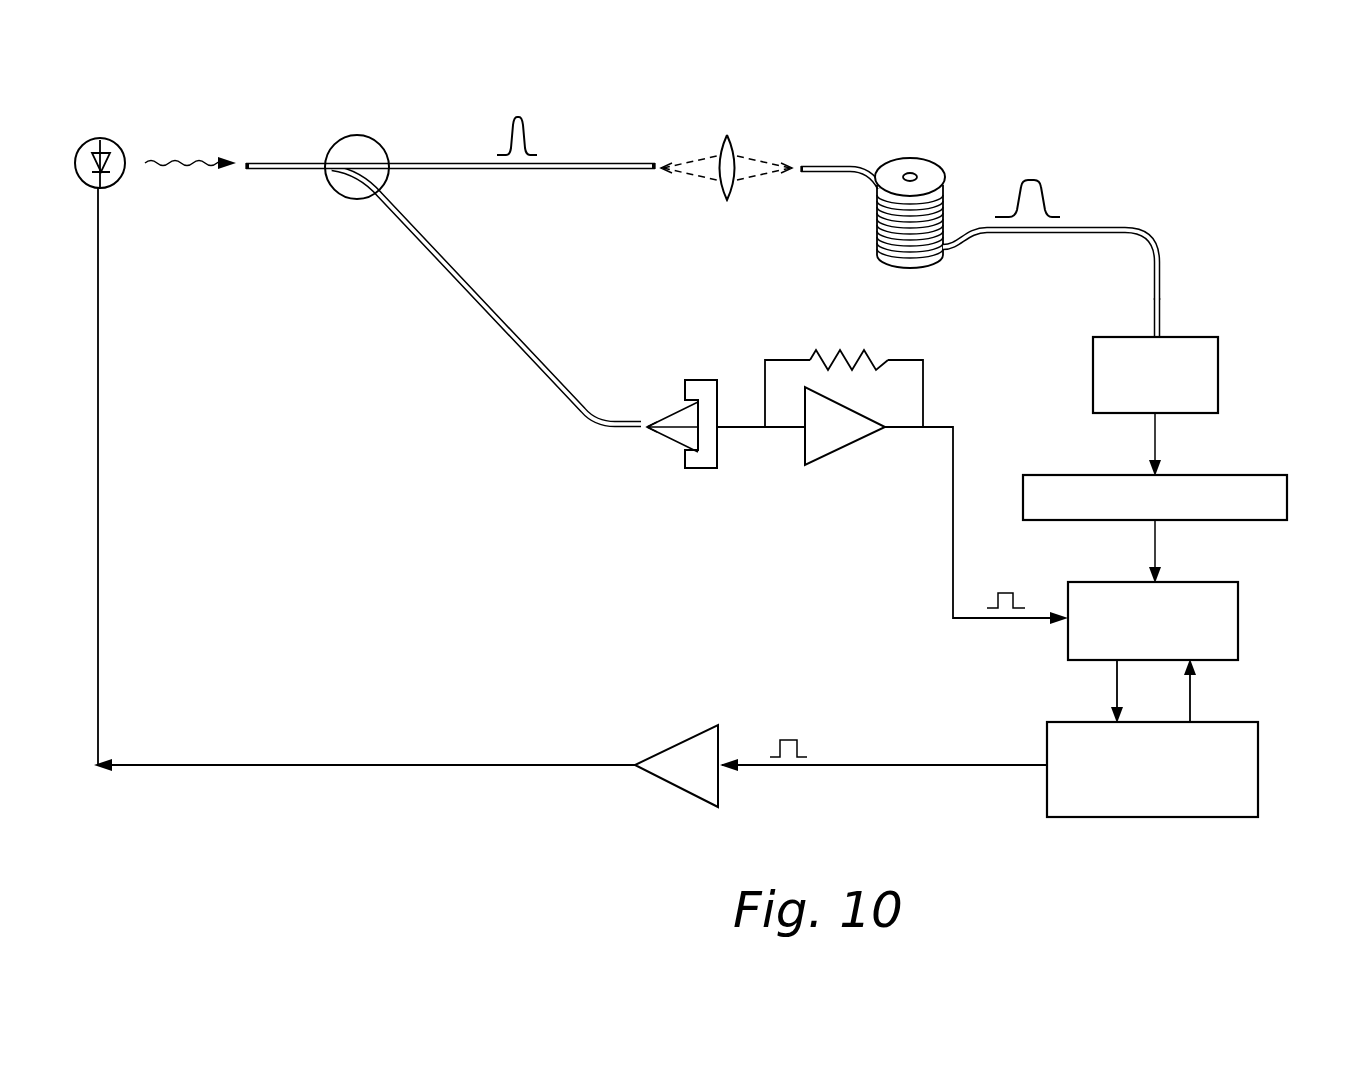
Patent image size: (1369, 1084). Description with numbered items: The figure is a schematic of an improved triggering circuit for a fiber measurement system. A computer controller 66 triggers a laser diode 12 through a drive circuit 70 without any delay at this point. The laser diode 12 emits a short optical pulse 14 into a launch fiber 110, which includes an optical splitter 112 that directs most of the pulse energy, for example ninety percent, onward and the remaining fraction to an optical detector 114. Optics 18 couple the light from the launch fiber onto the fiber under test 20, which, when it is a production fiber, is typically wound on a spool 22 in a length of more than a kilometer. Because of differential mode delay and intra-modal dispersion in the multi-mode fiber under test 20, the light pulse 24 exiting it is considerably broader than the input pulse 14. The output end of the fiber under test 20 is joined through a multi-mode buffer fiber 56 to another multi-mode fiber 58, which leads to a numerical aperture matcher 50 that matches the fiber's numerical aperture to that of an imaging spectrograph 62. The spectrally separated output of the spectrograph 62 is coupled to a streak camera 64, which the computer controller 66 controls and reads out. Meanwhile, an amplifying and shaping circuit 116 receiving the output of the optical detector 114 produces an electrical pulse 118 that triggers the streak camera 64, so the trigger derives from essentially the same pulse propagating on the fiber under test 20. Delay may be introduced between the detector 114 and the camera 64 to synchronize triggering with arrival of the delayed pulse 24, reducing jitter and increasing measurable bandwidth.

The laser diode 12 is at (113, 140).
The launch fiber 110 is at (283, 160).
The optical splitter 112 is at (357, 137).
The optical pulse 14 is at (518, 117).
The optics 18 is at (723, 143).
The fiber under test 20 is at (818, 176).
The spool 22 is at (912, 155).
The light pulse 24 is at (1020, 178).
The buffer fiber 56 is at (1105, 227).
The multi-mode fiber 58 is at (1161, 282).
The NA match 50 is at (1218, 380).
The imaging spectrograph 62 is at (1287, 497).
The streak camera 64 is at (1238, 622).
The computer controller 66 is at (1258, 763).
The diode pulse driver 70 is at (700, 730).
The optical detector 114 is at (705, 470).
The amplifying and shaping circuit 116 is at (843, 452).
The electrical pulse 118 is at (1007, 590).